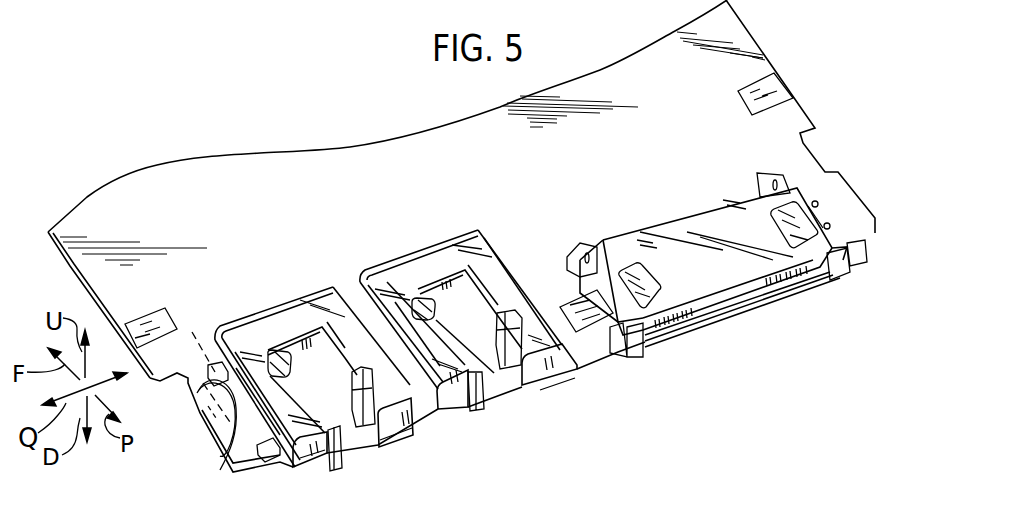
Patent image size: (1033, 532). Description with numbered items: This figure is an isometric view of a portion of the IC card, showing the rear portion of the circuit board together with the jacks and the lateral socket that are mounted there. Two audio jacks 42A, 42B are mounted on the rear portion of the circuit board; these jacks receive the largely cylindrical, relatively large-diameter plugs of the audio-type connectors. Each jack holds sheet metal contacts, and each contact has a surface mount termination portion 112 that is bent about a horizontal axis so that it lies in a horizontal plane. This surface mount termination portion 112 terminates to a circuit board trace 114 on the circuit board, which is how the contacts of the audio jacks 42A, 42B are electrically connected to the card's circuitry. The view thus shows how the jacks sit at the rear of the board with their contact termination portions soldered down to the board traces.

The audio jack 42A is at (397, 258).
The audio jack 42B is at (253, 315).
The surface mount termination portion 112 is at (220, 456).
The circuit board trace 114 is at (197, 393).